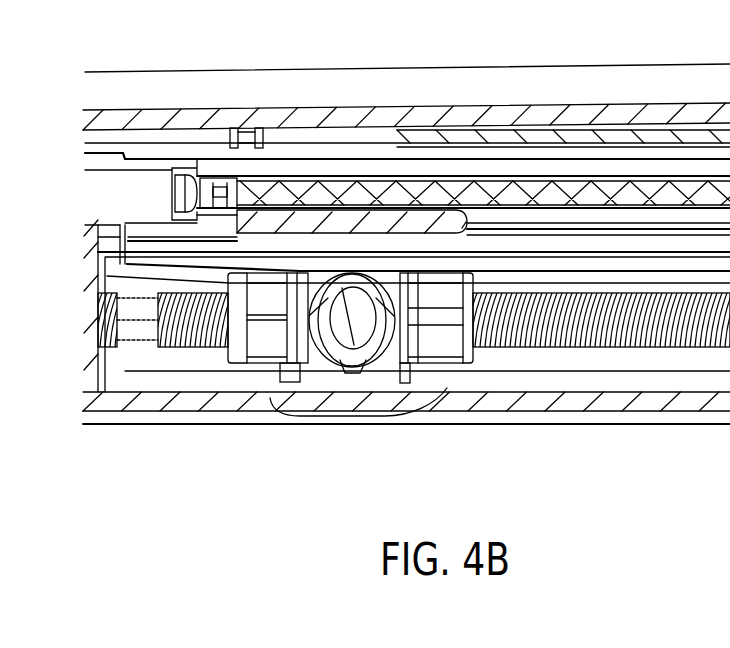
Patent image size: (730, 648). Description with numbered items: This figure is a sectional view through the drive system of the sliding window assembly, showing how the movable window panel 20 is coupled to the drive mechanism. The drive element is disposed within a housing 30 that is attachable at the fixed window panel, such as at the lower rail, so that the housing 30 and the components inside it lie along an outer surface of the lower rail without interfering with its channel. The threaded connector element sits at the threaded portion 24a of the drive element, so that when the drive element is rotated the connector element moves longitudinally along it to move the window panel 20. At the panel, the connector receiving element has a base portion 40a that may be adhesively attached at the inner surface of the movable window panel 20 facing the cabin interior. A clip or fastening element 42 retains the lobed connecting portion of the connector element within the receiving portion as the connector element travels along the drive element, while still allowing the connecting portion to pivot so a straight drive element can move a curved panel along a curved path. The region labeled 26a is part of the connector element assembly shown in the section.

The movable window panel 20 is at (493, 190).
The base portion 40a is at (346, 215).
The clip or fastening element 42 is at (348, 368).
The bearing block 26a is at (448, 345).
The threaded portion 24a is at (578, 313).
The housing 30 is at (221, 394).